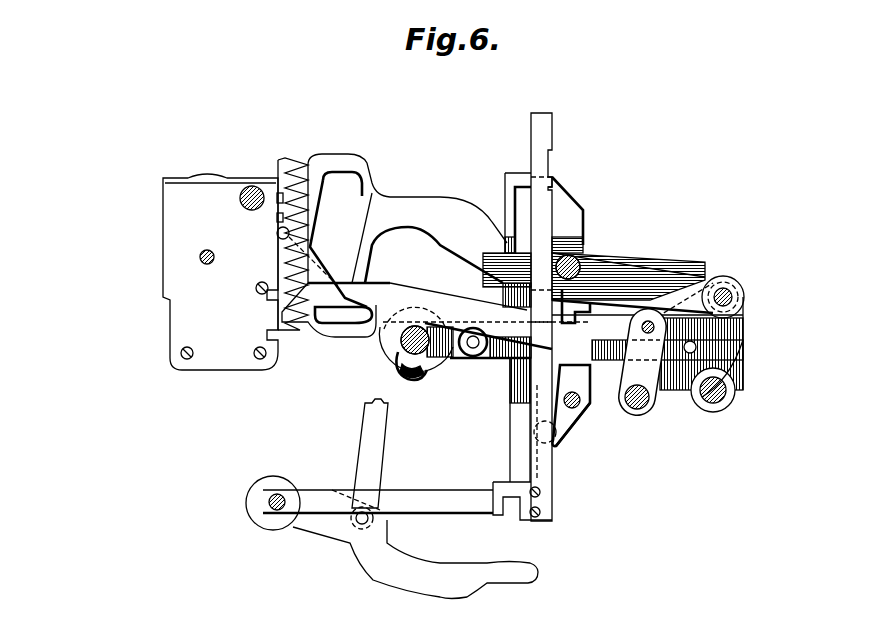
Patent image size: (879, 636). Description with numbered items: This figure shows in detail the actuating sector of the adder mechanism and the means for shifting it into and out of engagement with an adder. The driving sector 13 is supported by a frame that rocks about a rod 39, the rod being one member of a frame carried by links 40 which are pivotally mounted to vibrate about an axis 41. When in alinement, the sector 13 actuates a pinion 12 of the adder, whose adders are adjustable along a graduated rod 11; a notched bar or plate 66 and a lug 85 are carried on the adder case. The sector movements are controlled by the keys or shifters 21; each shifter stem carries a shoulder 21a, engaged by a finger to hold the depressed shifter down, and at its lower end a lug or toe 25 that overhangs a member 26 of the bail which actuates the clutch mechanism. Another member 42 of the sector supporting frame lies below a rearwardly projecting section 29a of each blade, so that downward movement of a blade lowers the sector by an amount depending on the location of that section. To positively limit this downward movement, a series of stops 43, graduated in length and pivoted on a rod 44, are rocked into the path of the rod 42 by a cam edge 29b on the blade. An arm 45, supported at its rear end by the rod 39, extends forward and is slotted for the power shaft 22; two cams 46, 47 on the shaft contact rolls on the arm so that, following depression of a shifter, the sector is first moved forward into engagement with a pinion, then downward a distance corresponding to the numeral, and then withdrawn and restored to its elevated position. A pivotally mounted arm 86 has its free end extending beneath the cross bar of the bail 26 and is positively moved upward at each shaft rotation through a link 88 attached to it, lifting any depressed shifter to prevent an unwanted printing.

The graduated rod 11 is at (256, 186).
The lug 85 is at (292, 239).
The notched bar or plate 66 is at (282, 200).
The driving sector 13 is at (404, 245).
The pinion 12 is at (220, 272).
The key or shifter 21 is at (531, 132).
The shoulder 21a is at (554, 182).
The rearwardly projecting section 29a is at (576, 214).
The member or rod of sector supporting frame 42 is at (583, 258).
The rod 39 is at (745, 294).
The links 40 is at (744, 348).
The axis 41 is at (728, 393).
The stops 43 is at (577, 380).
The rod 44 is at (576, 426).
The cam edge 29b is at (556, 446).
The arm 45 is at (493, 362).
The cam 47 is at (433, 372).
The power shaft 22 is at (406, 366).
The cam 46 is at (413, 384).
The link 88 is at (372, 454).
The member of bail 26 is at (488, 507).
The lug or toe 25 is at (518, 510).
The pivotally mounted arm 86 is at (392, 537).